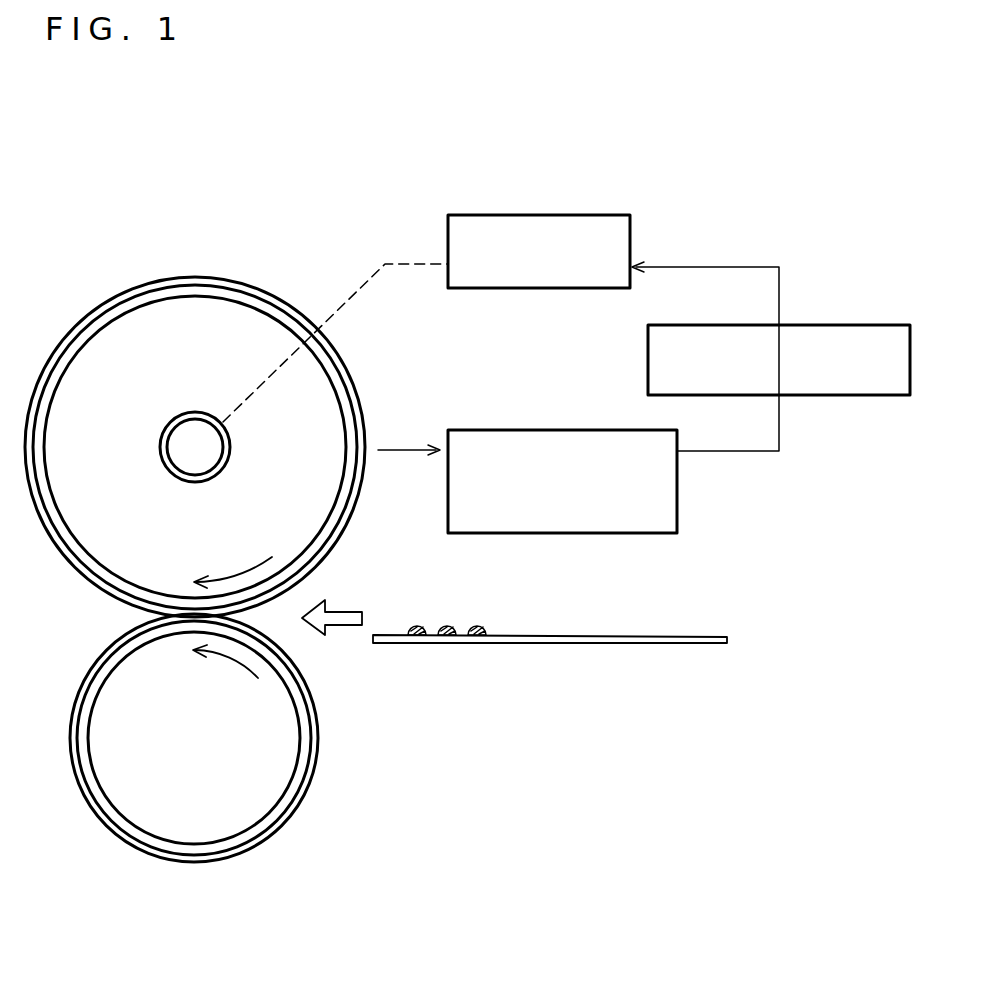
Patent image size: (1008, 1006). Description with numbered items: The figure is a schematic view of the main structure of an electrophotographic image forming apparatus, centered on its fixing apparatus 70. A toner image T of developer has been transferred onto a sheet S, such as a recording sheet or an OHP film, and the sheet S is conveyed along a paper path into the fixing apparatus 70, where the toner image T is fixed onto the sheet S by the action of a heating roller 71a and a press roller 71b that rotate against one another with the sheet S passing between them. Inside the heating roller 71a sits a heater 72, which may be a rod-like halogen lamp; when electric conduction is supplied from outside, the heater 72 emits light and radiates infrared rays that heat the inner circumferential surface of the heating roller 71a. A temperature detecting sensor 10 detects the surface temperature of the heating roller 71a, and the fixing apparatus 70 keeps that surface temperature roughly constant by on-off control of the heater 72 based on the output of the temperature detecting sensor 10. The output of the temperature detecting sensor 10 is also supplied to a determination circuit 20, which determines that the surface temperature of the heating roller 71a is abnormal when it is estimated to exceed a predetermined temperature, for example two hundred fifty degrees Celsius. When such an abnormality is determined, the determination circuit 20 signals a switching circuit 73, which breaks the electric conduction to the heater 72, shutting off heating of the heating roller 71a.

The fixing apparatus 70 is at (231, 510).
The heating roller 71a is at (118, 290).
The press roller 71b is at (308, 782).
The heater 72 is at (228, 467).
The switching circuit 73 is at (482, 213).
The temperature detecting sensor 10 is at (482, 428).
The determination circuit 20 is at (808, 323).
The toner image T is at (457, 618).
The sheet S is at (563, 643).